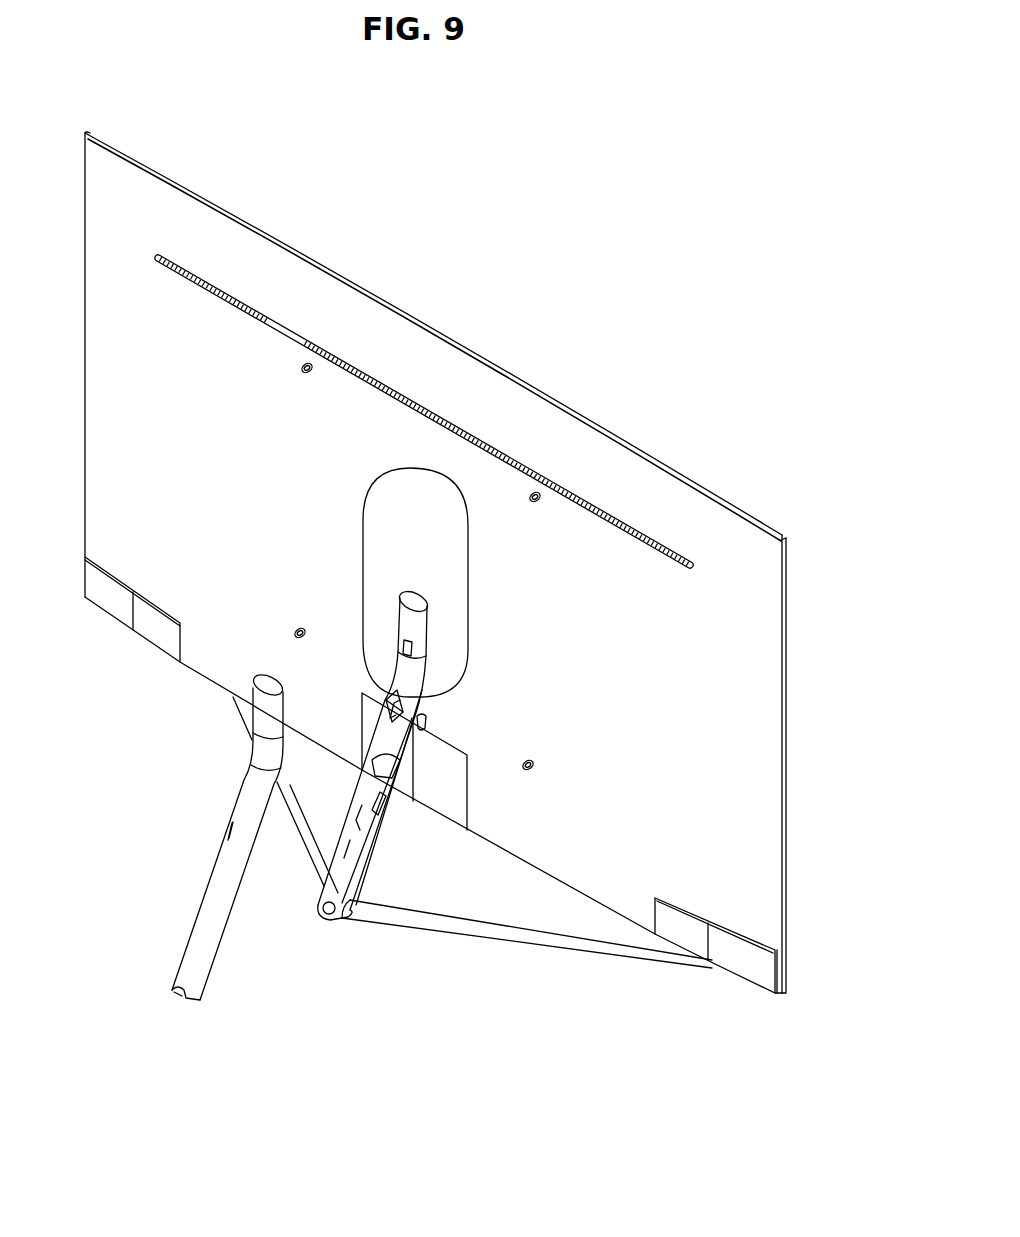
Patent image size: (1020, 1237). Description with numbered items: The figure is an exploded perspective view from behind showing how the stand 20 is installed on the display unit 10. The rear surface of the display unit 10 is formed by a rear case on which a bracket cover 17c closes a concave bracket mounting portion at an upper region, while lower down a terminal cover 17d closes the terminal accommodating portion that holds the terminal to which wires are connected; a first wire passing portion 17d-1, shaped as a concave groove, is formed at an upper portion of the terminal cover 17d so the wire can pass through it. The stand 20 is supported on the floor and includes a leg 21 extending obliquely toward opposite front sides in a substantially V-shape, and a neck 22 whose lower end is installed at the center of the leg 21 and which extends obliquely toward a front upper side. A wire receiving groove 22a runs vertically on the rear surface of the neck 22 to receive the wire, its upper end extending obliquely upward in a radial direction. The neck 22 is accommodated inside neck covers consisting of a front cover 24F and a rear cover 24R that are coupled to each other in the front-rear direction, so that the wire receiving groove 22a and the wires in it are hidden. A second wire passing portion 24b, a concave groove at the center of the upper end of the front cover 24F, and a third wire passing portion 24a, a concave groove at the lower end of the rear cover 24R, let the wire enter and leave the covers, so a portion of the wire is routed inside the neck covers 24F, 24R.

The display unit 10 is at (500, 354).
The bracket cover 17c is at (455, 590).
The terminal cover 17d is at (460, 803).
The first wire passing portion 17d-1 is at (419, 722).
The stand 20 is at (196, 858).
The leg 21 is at (410, 913).
The neck 22 is at (386, 730).
The wire receiving groove 22a is at (370, 862).
The front cover 24F is at (393, 805).
The rear cover 24R is at (242, 806).
The third wire passing portion 24a is at (183, 996).
The second wire passing portion 24b is at (400, 782).